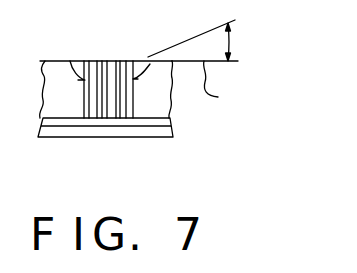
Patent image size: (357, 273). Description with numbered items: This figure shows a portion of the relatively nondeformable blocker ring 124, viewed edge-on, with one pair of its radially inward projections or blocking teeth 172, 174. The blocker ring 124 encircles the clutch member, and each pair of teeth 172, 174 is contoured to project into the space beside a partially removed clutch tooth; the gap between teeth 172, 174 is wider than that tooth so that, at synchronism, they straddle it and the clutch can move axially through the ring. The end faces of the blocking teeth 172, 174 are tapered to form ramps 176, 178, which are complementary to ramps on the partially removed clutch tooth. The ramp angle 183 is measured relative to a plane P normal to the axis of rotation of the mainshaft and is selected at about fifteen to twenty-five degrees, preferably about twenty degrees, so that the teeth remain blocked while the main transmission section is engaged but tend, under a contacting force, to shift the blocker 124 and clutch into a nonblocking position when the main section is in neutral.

The blocker ring 124 is at (141, 124).
The radially inward projection 172 is at (150, 64).
The radially inward projection 174 is at (70, 61).
The taper 176 is at (124, 70).
The taper 178 is at (103, 72).
The ramp angle 183 is at (230, 38).
The plane P is at (205, 84).